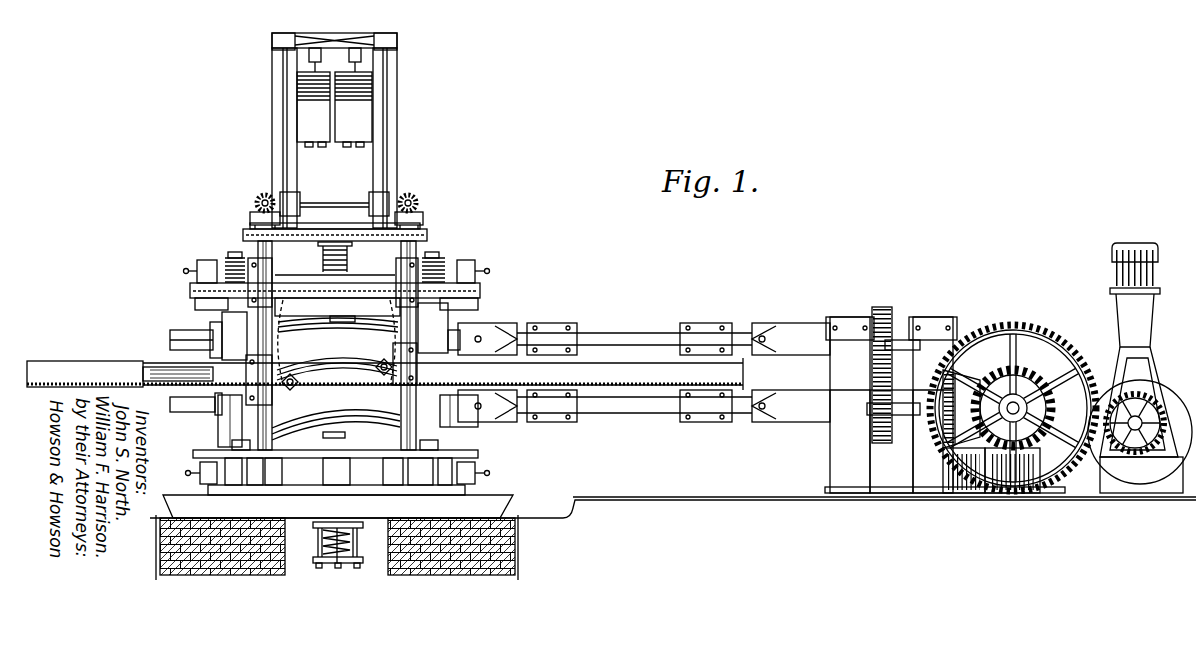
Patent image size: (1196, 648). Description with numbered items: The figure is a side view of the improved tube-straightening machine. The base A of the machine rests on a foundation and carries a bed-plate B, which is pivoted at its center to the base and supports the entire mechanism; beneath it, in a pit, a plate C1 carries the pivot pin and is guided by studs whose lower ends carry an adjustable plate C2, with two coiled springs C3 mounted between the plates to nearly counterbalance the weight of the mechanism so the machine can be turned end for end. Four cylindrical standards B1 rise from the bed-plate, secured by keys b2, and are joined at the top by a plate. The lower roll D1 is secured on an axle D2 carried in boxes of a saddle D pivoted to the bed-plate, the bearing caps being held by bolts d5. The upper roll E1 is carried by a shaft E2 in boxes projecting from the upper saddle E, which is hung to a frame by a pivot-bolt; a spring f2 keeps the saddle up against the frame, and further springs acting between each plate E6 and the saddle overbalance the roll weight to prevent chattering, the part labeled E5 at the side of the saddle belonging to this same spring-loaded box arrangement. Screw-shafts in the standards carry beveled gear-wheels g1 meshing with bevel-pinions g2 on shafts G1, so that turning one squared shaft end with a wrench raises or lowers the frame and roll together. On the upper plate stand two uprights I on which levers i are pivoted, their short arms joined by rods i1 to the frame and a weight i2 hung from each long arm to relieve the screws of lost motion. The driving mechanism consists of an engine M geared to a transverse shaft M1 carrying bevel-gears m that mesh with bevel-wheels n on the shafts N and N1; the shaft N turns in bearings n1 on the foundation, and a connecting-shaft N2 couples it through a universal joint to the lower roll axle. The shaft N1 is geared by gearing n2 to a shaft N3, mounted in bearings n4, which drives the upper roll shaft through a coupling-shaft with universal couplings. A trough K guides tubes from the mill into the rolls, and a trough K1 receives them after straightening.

The levers i is at (364, 40).
The rods i1 is at (329, 161).
The weight i2 is at (334, 109).
The uprights I is at (374, 186).
The shafts G1 is at (338, 204).
The bevel-pinions g2 is at (335, 192).
The beveled gear-wheels g1 is at (335, 216).
The side cylinders E5 is at (342, 267).
The plate E6 is at (320, 262).
The upper saddle E is at (455, 310).
The upper roll E1 is at (338, 342).
The cylindrical standards B1 is at (400, 338).
The shaft E2 is at (190, 336).
The trough K1 is at (80, 361).
The trough K is at (740, 375).
The axle D2 is at (192, 412).
The saddle D is at (455, 405).
The bolts d5 is at (331, 437).
The lower roll D1 is at (336, 417).
The bed-plate B is at (320, 472).
The keys b2 is at (266, 471).
The spring f2 is at (404, 474).
The base A is at (338, 506).
The plate C1 is at (348, 484).
The plate C2 is at (355, 563).
The coiled springs C3 is at (333, 560).
The shaft N1 is at (638, 333).
The connecting-shaft N2 is at (648, 414).
The bearings n1 is at (945, 405).
The gearing n2 is at (891, 387).
The shaft N is at (910, 403).
The shaft N3 is at (905, 340).
The bearings n4 is at (896, 317).
The bevel-wheels n is at (965, 376).
The transverse shaft M1 is at (1022, 398).
The bevel-gears m is at (1030, 405).
The engine M is at (1140, 368).